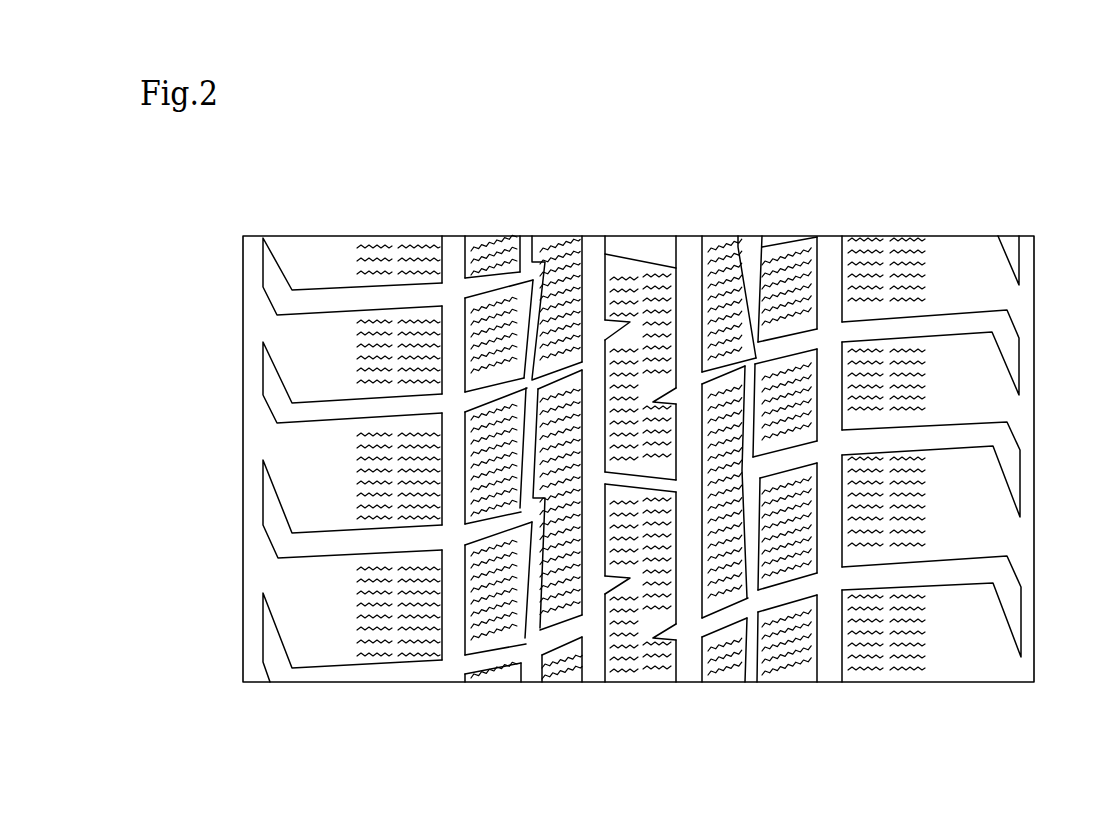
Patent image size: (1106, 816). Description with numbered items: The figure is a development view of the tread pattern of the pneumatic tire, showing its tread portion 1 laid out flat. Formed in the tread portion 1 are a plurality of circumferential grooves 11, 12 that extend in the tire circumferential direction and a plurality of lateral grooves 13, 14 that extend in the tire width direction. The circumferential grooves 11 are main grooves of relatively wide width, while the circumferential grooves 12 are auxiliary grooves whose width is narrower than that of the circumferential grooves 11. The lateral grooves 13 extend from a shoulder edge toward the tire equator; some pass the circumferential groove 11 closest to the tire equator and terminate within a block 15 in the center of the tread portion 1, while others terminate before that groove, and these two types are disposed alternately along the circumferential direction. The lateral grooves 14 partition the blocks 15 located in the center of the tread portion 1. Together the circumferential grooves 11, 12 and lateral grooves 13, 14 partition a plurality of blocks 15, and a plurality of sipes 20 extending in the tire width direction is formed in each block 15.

The tread portion 1 is at (870, 232).
The circumferential grooves 11 is at (455, 238).
The circumferential grooves 12 is at (527, 238).
The lateral grooves 13 is at (303, 301).
The lateral grooves 14 is at (618, 250).
The blocks 15 is at (373, 240).
The sipes 20 is at (410, 655).